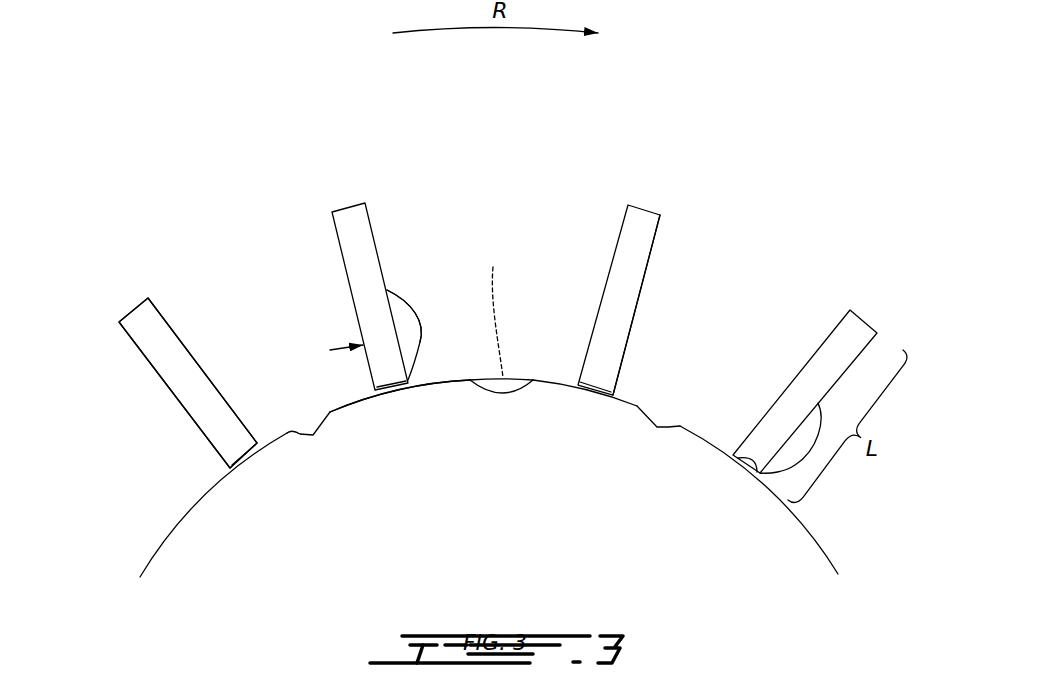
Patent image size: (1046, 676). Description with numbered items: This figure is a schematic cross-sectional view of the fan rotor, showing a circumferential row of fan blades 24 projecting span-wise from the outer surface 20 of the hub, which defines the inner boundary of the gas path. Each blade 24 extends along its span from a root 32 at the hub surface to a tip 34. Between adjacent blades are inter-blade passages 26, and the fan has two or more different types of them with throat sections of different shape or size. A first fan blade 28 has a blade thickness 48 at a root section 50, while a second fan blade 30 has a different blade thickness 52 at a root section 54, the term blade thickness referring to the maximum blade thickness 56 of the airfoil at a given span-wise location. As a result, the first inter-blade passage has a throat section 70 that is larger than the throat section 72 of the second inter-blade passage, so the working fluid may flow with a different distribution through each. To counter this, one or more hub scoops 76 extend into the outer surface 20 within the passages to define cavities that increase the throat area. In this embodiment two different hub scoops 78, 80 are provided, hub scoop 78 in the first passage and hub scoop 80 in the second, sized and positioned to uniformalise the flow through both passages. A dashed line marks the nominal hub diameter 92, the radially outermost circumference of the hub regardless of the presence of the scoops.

The outer surface 20 is at (550, 383).
The fan blade 24 is at (686, 215).
The inter-blade passage 26 is at (228, 294).
The first fan blade 28 is at (127, 328).
The second fan blade 30 is at (333, 213).
The root 32 is at (756, 478).
The tip 34 is at (870, 322).
The blade thickness 48 is at (212, 445).
The root section 50 is at (632, 366).
The blade thickness 52 is at (419, 332).
The root section 54 is at (420, 298).
The maximum blade thickness 56 is at (807, 450).
The throat section 70 is at (240, 418).
The throat section 72 is at (566, 338).
The hub scoop 76 is at (475, 408).
The hub scoop 78 is at (313, 435).
The hub scoop 80 is at (513, 394).
The nominal hub diameter 92 is at (497, 308).